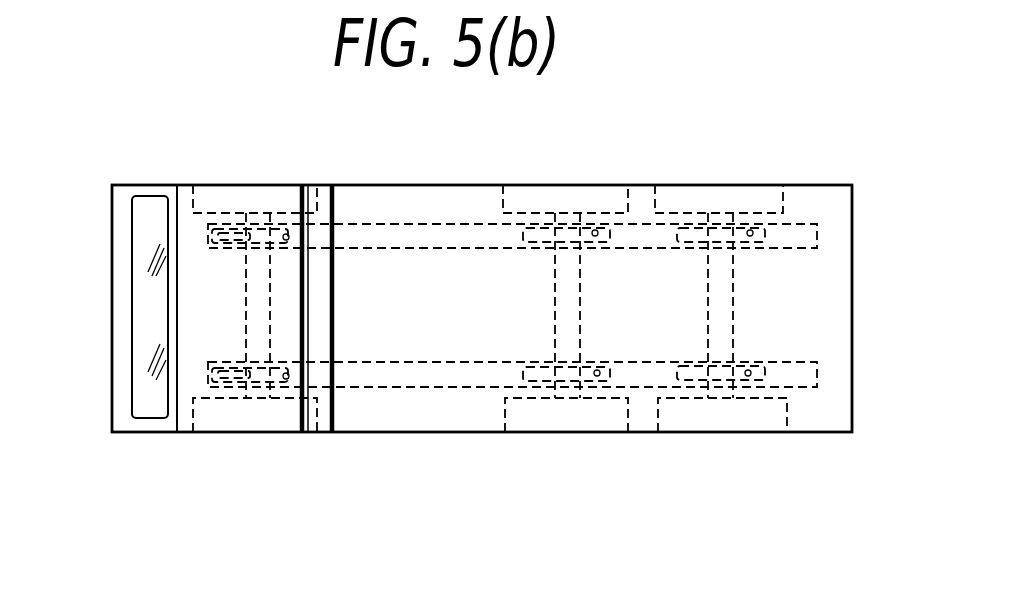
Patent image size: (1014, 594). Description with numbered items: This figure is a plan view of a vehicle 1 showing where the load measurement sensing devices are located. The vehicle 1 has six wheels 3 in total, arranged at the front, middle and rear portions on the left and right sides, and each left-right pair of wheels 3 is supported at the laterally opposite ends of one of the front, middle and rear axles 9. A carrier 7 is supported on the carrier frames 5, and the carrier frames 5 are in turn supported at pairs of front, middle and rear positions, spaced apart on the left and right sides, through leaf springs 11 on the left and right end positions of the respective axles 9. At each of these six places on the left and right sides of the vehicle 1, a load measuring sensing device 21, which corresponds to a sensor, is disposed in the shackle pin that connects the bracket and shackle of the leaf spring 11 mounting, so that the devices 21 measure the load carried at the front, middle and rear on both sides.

The vehicle 1 is at (455, 446).
The wheels 3 is at (215, 185).
The carrier frames 5 is at (393, 228).
The carrier 7 is at (808, 185).
The axles 9 is at (245, 298).
The leaf springs 11 is at (210, 240).
The load measuring sensing devices 21 is at (286, 234).